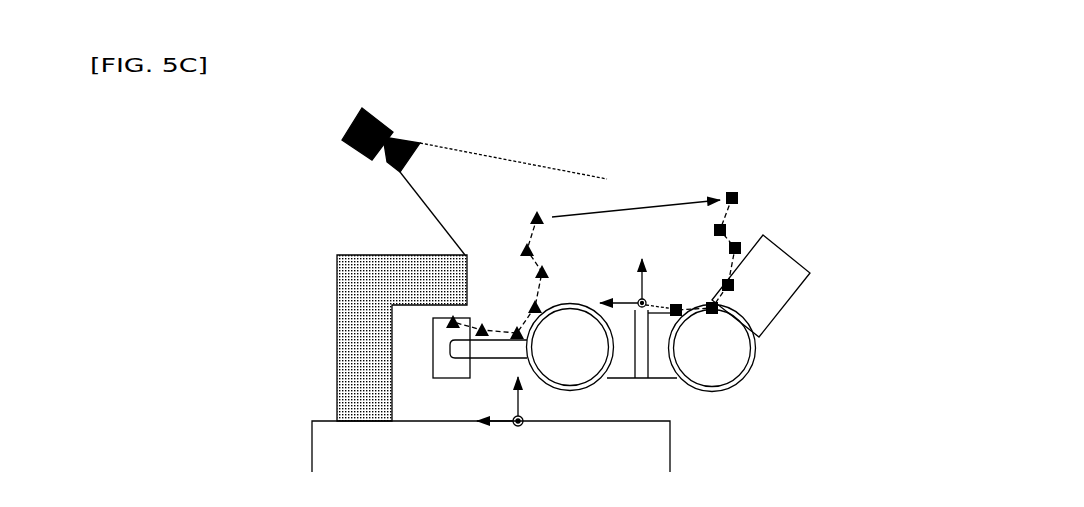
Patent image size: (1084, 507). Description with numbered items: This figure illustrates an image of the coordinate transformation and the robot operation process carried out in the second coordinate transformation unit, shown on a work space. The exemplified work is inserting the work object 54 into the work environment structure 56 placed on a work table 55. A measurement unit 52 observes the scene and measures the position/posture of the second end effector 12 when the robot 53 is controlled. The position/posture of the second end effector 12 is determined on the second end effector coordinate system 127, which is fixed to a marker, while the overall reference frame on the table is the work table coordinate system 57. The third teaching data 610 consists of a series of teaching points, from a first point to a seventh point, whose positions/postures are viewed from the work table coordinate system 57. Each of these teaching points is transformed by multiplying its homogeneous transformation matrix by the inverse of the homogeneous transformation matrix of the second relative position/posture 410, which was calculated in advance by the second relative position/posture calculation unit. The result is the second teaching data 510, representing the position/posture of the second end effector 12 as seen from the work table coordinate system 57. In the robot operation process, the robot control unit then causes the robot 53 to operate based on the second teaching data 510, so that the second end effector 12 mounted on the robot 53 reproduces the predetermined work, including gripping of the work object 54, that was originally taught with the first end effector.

The measurement unit 52 is at (356, 150).
The work environment structure 56 is at (337, 292).
The work table 55 is at (671, 447).
The work object 54 is at (433, 356).
The second end effector 12 is at (570, 304).
The robot 53 is at (777, 318).
The second end effector coordinate system 127 is at (646, 262).
The work table coordinate system 57 is at (522, 430).
The third teaching data 610 is at (527, 243).
The second relative position/posture 410 is at (682, 200).
The second teaching data 510 is at (727, 210).